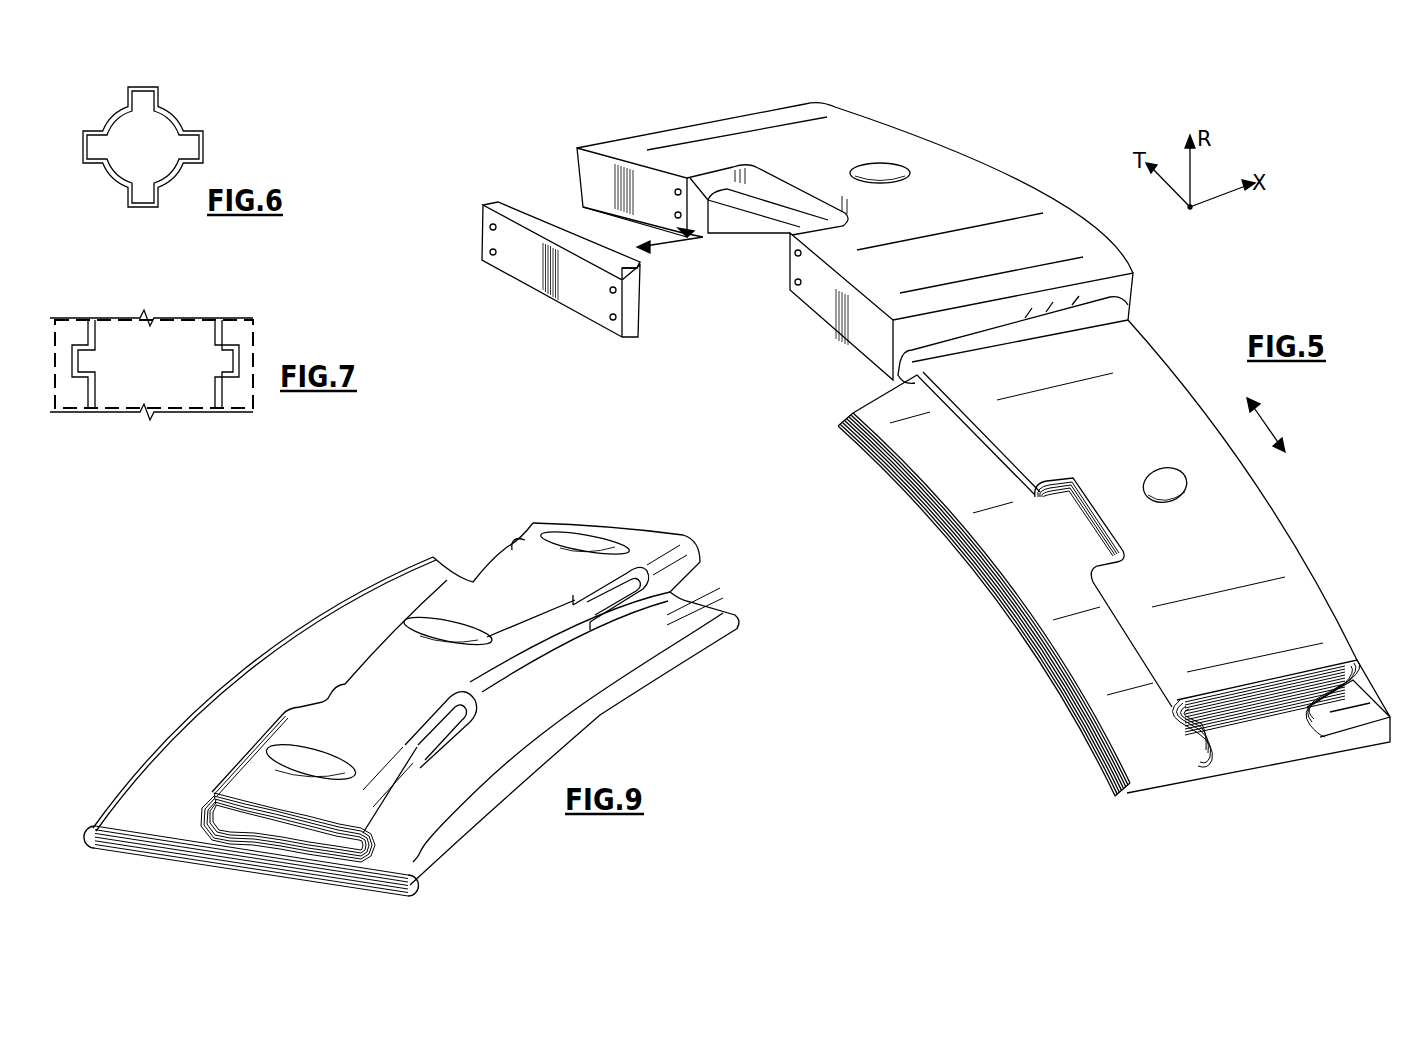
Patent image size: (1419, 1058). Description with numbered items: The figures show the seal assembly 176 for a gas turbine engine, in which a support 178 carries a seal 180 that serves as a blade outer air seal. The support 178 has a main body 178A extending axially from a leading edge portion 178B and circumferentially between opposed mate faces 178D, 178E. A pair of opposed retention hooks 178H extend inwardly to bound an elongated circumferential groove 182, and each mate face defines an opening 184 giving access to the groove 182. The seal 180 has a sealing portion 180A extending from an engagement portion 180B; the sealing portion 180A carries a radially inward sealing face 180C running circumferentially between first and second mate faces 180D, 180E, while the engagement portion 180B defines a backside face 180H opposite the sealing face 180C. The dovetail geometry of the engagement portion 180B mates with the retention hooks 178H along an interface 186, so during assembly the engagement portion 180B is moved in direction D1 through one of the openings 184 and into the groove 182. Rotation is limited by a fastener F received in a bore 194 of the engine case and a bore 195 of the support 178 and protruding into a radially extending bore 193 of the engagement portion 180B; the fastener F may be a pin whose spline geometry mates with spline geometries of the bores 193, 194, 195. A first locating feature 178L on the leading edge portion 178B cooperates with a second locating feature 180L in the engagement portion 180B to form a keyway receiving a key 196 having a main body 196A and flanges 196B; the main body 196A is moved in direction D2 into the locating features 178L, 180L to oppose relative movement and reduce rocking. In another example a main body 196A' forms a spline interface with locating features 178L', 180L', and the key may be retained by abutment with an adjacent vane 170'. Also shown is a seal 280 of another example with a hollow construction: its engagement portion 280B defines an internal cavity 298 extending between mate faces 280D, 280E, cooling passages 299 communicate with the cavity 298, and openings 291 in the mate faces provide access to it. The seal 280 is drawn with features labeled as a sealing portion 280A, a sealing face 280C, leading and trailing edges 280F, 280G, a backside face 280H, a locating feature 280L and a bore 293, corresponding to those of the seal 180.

In FIG. 6, the fastener F is at (155, 118).
In FIG. 6, the radially extending bore 193 is at (150, 128).
In FIG. 5, the radially extending bore 193 is at (1152, 470).
In FIG. 6, the bore 194 is at (150, 128).
In FIG. 6, the bore 195 is at (150, 128).
In FIG. 5, the bore 195 is at (880, 168).
In FIG. 7, the vane 170' is at (151, 385).
In FIG. 7, the main body 196A' is at (157, 339).
In FIG. 7, the locating feature 178L' is at (295, 347).
In FIG. 7, the locating feature 180L' is at (227, 348).
In FIG. 5, the seal assembly 176 is at (615, 105).
In FIG. 5, the support 178 is at (847, 108).
In FIG. 5, the main body 178A is at (943, 165).
In FIG. 5, the leading edge portion 178B is at (647, 183).
In FIG. 5, the mate face 178D is at (1128, 305).
In FIG. 5, the mate face 178E is at (583, 207).
In FIG. 5, the retention hooks 178H is at (910, 383).
In FIG. 5, the first locating feature 178L is at (804, 200).
In FIG. 5, the circumferential groove 182 is at (724, 250).
In FIG. 5, the opening 184 is at (880, 347).
In FIG. 5, the interface 186 is at (770, 233).
In FIG. 5, the key 196 is at (540, 207).
In FIG. 5, the main body 196A is at (675, 297).
In FIG. 5, the flanges 196B is at (483, 237).
In FIG. 5, the direction D2 is at (657, 243).
In FIG. 5, the direction D1 is at (1275, 428).
In FIG. 5, the seal 180 is at (1160, 793).
In FIG. 5, the sealing portion 180A is at (1067, 687).
In FIG. 5, the engagement portion 180B is at (1297, 540).
In FIG. 5, the sealing face 180C is at (1206, 790).
In FIG. 5, the first mate face 180D is at (1340, 743).
In FIG. 5, the second mate face 180E is at (853, 413).
In FIG. 5, the backside face 180H is at (1337, 617).
In FIG. 5, the second locating feature 180L is at (1119, 592).
In FIG. 9, the seal 280 is at (243, 623).
In FIG. 9, the first surface 280A is at (390, 573).
In FIG. 9, the engagement portion 280B is at (597, 523).
In FIG. 9, the third surface 280C is at (367, 887).
In FIG. 9, the mate face 280D is at (138, 857).
In FIG. 9, the mate face 280E is at (717, 603).
In FIG. 9, the first side edge 280F is at (140, 770).
In FIG. 9, the second side edge 280G is at (450, 850).
In FIG. 9, the slot 280H is at (650, 548).
In FIG. 9, the tab slot 280L is at (440, 712).
In FIG. 9, the hole 293 is at (420, 628).
In FIG. 9, the cooling passages 299 is at (307, 753).
In FIG. 9, the internal cavity 298 is at (300, 847).
In FIG. 9, the openings 291 is at (260, 827).